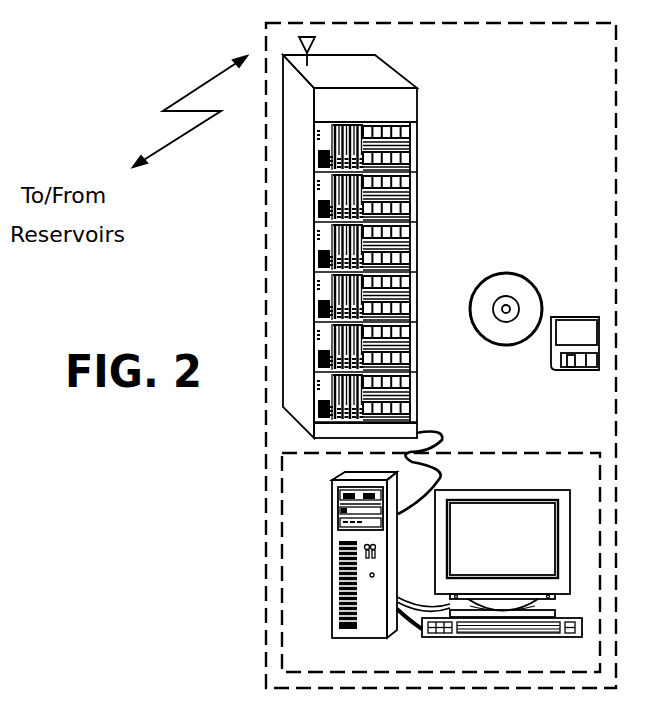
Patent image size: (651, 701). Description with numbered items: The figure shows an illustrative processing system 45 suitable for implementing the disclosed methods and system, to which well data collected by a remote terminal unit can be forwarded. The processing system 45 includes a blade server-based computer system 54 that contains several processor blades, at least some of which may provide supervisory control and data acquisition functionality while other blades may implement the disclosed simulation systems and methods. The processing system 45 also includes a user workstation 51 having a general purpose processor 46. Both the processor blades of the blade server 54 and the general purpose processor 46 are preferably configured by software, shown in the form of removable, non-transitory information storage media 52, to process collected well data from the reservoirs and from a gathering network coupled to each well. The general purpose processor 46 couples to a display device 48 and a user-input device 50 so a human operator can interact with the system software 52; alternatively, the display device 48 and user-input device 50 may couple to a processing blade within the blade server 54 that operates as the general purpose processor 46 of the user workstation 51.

The processing system 45 is at (602, 64).
The user workstation 51 is at (325, 492).
The blade server-based computer system 54 is at (387, 76).
The removable non-transitory information storage media 52 is at (561, 318).
The general purpose processor 46 is at (397, 571).
The display device 48 is at (560, 594).
The user-input device 50 is at (556, 638).